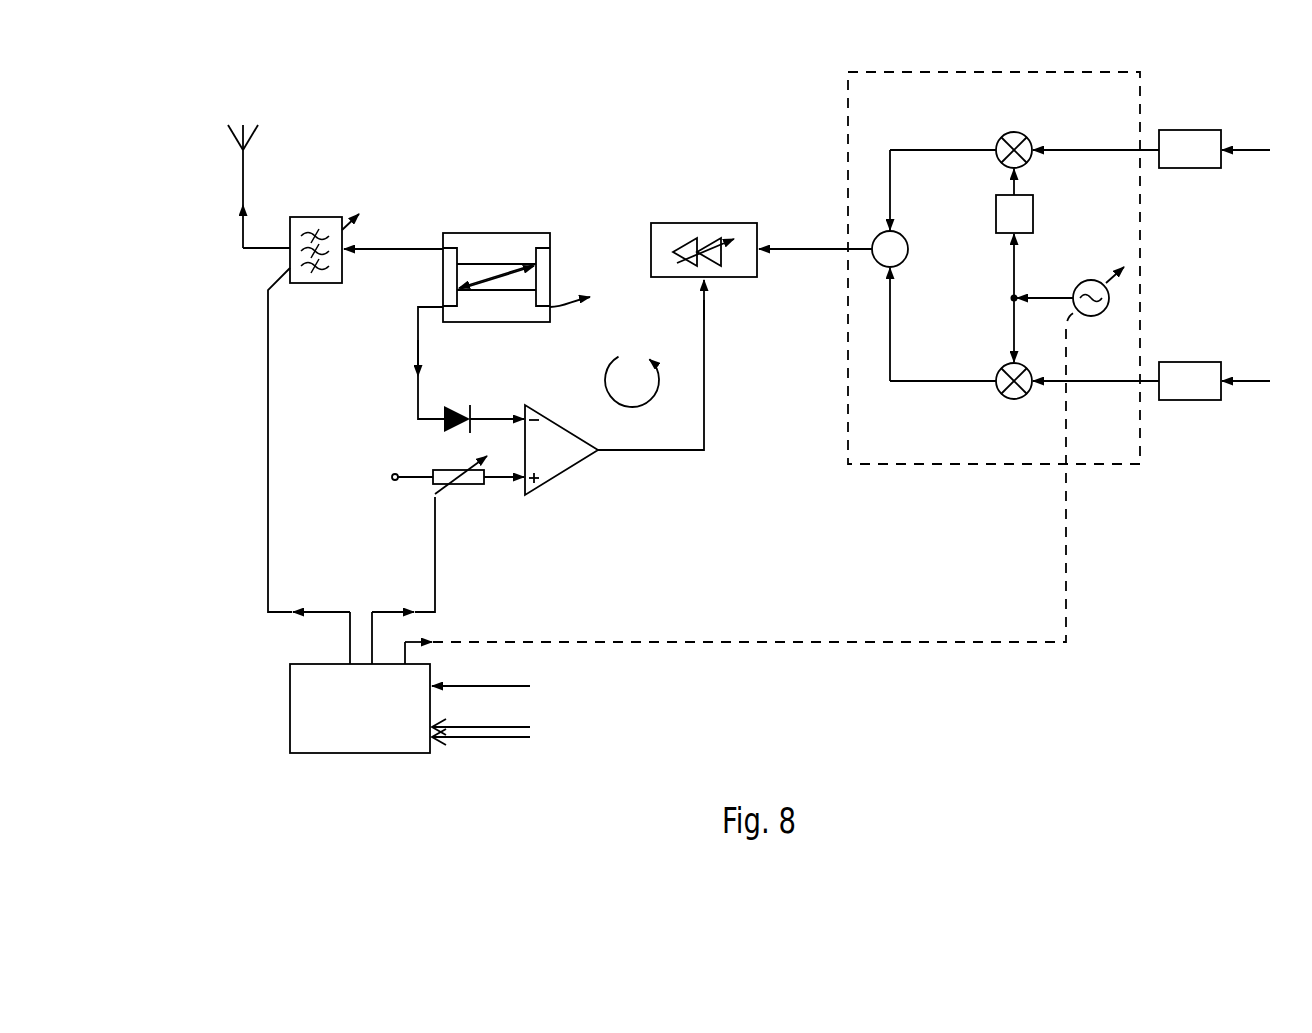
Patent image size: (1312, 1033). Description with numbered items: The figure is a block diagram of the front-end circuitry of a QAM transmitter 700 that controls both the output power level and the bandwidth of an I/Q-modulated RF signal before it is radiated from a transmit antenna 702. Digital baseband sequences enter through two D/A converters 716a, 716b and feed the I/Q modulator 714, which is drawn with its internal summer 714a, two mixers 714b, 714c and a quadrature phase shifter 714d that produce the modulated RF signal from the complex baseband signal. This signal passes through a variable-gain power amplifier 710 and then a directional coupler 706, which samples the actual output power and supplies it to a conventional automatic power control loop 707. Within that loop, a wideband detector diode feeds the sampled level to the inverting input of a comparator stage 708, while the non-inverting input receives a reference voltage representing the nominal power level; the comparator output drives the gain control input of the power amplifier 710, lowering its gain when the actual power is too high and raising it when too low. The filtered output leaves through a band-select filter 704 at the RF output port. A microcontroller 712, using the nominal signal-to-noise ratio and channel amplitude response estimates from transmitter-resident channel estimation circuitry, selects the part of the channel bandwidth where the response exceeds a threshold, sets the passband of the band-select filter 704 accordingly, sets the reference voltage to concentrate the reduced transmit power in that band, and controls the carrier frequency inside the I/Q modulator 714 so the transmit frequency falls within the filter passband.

The QAM transmitter 700 is at (714, 56).
The antenna 702 is at (243, 125).
The band-select filter 704 is at (342, 278).
The directional coupler 706 is at (500, 322).
The automatic power control loop 707 is at (636, 407).
The comparator stage 708 is at (565, 478).
The variable-gain power amplifier 710 is at (738, 277).
The microcontroller 712 is at (290, 712).
The I/Q modulator 714 is at (895, 466).
The summer 714a is at (908, 243).
The Q mixer 714b is at (1014, 132).
The I mixer 714c is at (1014, 400).
The pi/2 phase shifter 714d is at (1033, 218).
The I-channel D/A converter 716a is at (1190, 362).
The Q-channel D/A converter 716b is at (1190, 130).